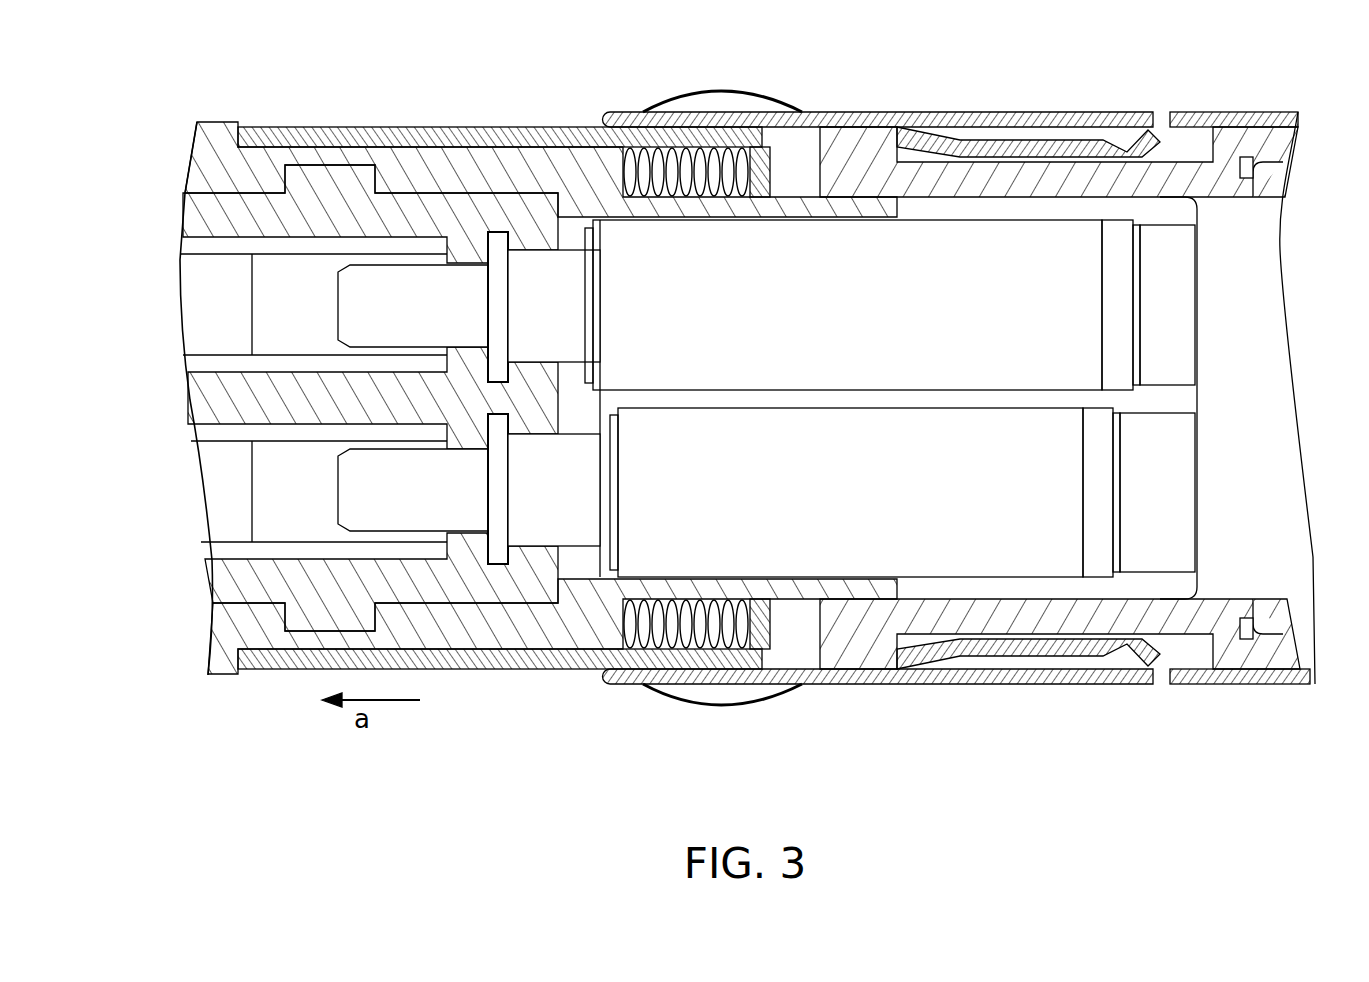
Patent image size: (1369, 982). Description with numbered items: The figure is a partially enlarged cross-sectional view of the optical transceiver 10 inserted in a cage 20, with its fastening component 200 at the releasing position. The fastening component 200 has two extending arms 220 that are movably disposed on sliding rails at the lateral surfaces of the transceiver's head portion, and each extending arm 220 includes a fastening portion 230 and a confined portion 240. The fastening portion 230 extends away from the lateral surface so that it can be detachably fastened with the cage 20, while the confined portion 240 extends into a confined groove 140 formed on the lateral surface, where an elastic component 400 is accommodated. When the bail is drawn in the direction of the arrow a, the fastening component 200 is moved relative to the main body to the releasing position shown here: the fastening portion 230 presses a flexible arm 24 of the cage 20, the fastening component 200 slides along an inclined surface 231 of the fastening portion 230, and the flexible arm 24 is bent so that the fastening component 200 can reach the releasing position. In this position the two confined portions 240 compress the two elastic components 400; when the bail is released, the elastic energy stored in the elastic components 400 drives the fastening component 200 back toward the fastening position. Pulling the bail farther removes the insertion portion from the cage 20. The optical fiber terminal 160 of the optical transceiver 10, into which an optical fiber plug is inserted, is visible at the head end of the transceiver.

The optical transceiver 10 is at (140, 277).
The cage 20 is at (1278, 684).
The flexible arm 24 is at (1113, 128).
The confined groove 140 is at (797, 182).
The optical fiber terminal 160 is at (292, 296).
The fastening component 200 is at (437, 126).
The extending arm 220 is at (548, 126).
The fastening portion 230 is at (1187, 137).
The inclined surface 231 is at (1097, 677).
The confined portion 240 is at (760, 160).
The elastic component 400 is at (675, 145).